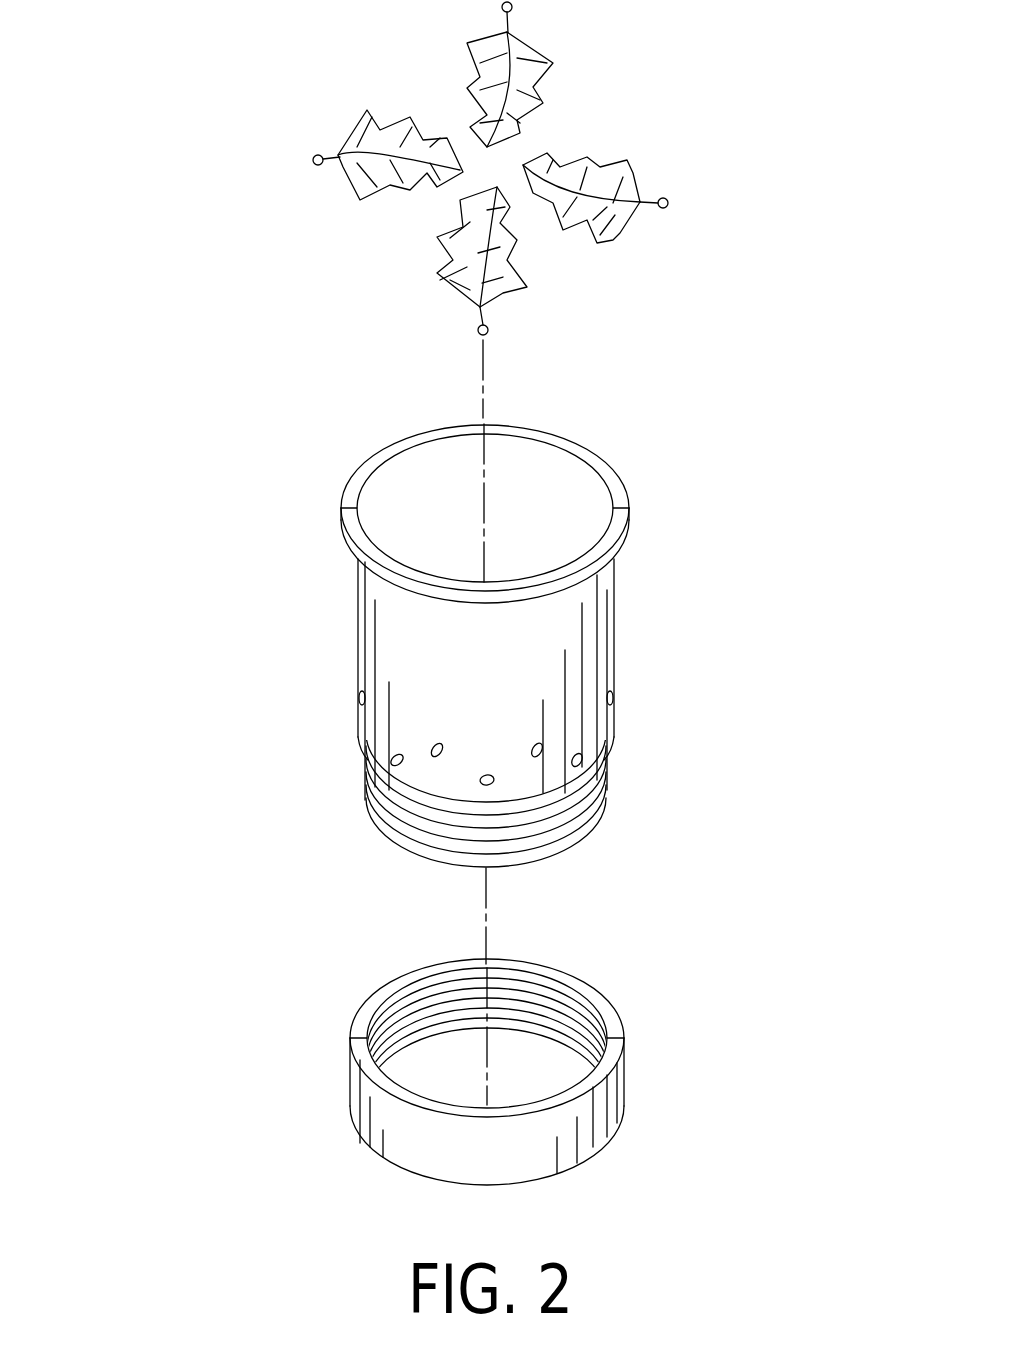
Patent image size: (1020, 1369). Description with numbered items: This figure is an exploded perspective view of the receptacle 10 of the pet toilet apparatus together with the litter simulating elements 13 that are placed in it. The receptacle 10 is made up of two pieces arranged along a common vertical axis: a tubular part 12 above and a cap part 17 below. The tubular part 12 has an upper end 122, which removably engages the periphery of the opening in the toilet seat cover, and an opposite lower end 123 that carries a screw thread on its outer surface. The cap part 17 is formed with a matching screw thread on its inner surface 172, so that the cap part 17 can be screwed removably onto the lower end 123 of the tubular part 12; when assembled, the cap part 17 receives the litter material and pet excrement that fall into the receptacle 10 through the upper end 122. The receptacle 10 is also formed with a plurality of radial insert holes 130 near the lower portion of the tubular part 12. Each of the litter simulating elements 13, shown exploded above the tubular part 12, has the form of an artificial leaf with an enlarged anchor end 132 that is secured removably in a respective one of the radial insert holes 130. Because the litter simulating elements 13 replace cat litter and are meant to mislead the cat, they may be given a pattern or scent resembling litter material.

The receptacle 10 is at (195, 322).
The tubular part 12 is at (458, 646).
The litter simulating elements 13 is at (630, 113).
The cap part 17 is at (441, 1072).
The upper end 122 is at (618, 503).
The lower end 123 is at (598, 796).
The radial insert holes 130 is at (482, 782).
The enlarged anchor end 132 is at (480, 330).
The inner surface 172 is at (575, 1017).